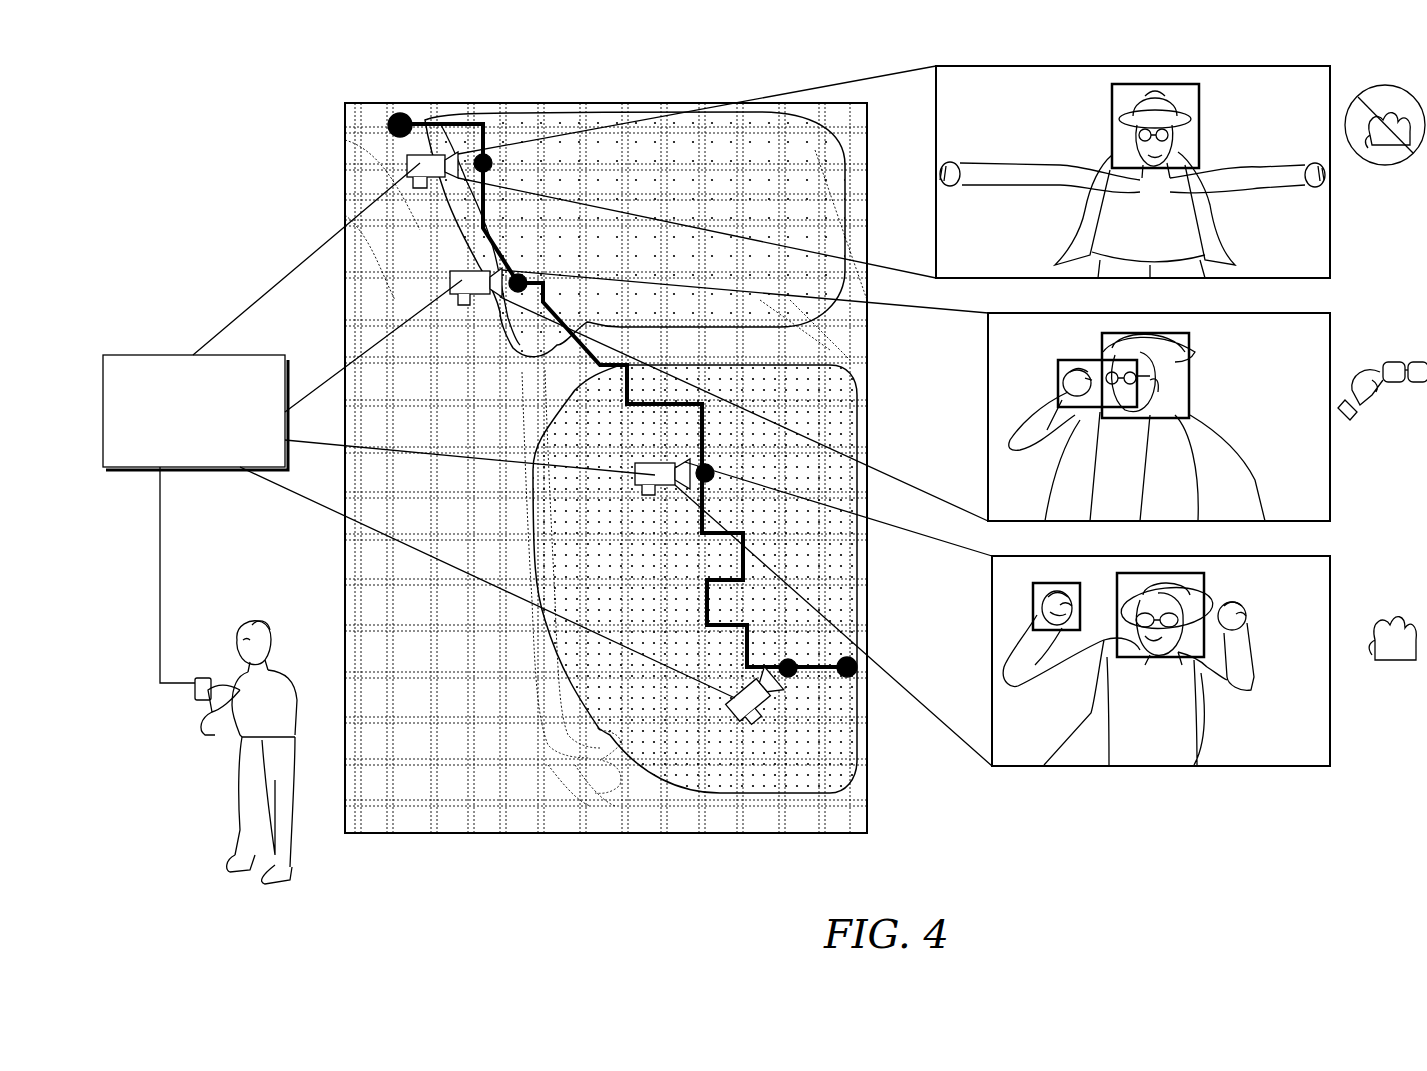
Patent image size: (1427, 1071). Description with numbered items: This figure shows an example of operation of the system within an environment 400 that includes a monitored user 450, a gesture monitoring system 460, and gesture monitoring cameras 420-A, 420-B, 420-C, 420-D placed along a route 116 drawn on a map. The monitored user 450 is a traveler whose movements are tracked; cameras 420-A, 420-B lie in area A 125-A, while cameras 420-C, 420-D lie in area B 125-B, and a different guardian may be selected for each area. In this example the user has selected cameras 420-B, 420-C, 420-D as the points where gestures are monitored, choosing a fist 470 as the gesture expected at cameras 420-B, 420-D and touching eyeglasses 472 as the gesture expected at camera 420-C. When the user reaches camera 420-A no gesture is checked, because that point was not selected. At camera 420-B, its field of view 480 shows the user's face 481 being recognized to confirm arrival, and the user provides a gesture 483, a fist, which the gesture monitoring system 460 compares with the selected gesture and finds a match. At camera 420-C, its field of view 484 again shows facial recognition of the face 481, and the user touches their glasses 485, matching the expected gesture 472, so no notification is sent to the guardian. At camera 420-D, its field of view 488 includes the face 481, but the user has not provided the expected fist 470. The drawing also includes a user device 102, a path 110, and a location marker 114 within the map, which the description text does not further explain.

The environment 400 is at (175, 90).
The mobile device 102 is at (200, 678).
The route 110 is at (852, 672).
The starting location 114 is at (400, 113).
The route 116 is at (513, 340).
The area A 125-A is at (870, 437).
The area B 125-B is at (517, 115).
The gesture monitoring camera 420-A is at (757, 700).
The gesture monitoring camera 420-B is at (640, 480).
The gesture monitoring camera 420-C is at (465, 272).
The gesture monitoring camera 420-D is at (405, 162).
The monitored user 450 is at (250, 622).
The gesture monitoring system 460 is at (185, 355).
The fist gesture 470 is at (1372, 90).
The touching eyeglasses gesture 472 is at (1385, 345).
The field of view of gesture monitoring camera 420-B 480 is at (1240, 767).
The face of the monitored user 481 is at (1200, 90).
The gesture provided by the monitored user 483 is at (1035, 600).
The field of view of gesture monitoring camera 420-C 484 is at (1332, 470).
The touching glasses gesture 485 is at (1060, 365).
The field of view of gesture monitoring camera 420-D 488 is at (1332, 220).